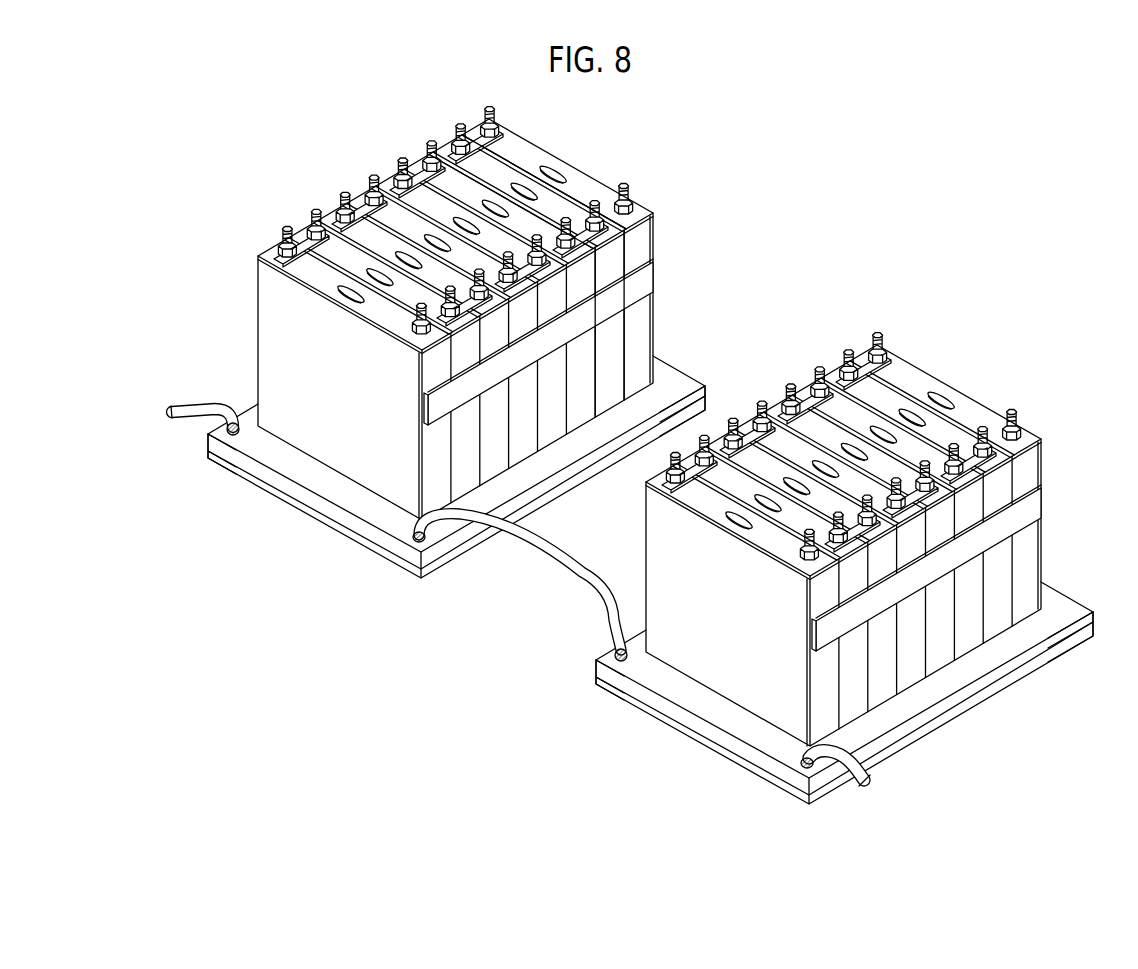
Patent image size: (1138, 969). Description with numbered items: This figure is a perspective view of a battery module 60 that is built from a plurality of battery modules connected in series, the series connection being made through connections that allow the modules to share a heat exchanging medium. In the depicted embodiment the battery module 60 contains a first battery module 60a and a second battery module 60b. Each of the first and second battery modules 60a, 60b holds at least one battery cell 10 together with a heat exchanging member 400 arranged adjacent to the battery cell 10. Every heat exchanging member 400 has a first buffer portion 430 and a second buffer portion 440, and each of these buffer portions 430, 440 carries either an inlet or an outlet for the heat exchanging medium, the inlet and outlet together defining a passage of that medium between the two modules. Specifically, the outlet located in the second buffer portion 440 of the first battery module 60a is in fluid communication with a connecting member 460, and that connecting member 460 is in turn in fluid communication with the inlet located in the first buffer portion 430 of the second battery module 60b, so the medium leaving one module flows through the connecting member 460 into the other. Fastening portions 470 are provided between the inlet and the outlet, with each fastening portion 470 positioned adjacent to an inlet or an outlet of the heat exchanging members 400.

The battery cell 10 is at (607, 368).
The battery module 60 is at (1107, 340).
The first battery module 60a is at (1046, 383).
The second battery module 60b is at (662, 158).
The heat exchanging member 400 is at (303, 519).
The first buffer portion 430 is at (208, 441).
The second buffer portion 440 is at (525, 503).
The connecting member 460 is at (550, 546).
The fastening portion 470 is at (229, 422).